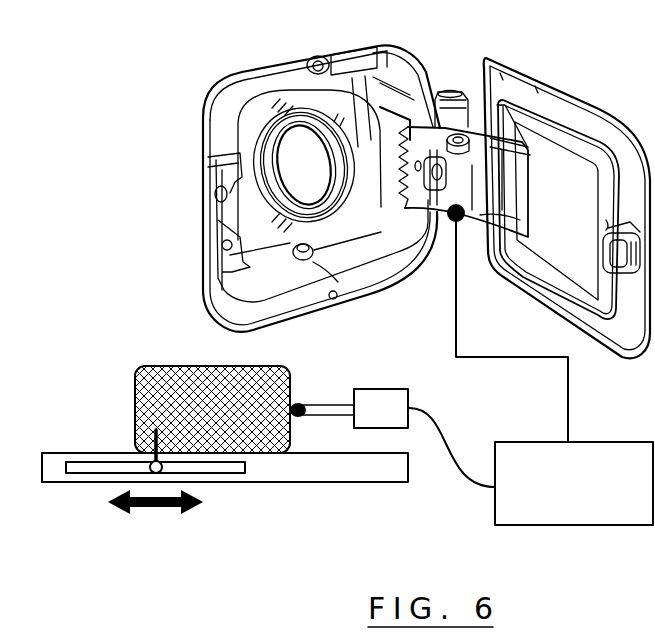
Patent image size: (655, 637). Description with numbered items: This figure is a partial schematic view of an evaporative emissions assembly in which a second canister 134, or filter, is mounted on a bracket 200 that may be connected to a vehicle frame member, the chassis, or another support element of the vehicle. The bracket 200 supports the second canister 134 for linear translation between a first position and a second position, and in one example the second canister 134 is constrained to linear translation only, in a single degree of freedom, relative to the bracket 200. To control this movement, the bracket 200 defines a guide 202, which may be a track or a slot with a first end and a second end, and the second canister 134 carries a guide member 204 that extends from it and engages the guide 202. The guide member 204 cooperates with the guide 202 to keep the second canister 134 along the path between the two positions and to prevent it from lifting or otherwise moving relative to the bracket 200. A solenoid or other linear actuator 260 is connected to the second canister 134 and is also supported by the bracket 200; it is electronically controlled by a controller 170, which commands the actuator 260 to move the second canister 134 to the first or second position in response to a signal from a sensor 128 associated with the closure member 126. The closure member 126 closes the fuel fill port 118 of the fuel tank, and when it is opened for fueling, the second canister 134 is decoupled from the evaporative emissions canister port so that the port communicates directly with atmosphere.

The fuel fill port 118 is at (298, 127).
The closure member 126 is at (577, 120).
The sensor 128 is at (452, 224).
The second canister 134 is at (166, 385).
The controller 170 is at (574, 483).
The bracket 200 is at (335, 472).
The guide 202 is at (80, 470).
The guide member 204 is at (156, 475).
The linear actuator 260 is at (376, 405).